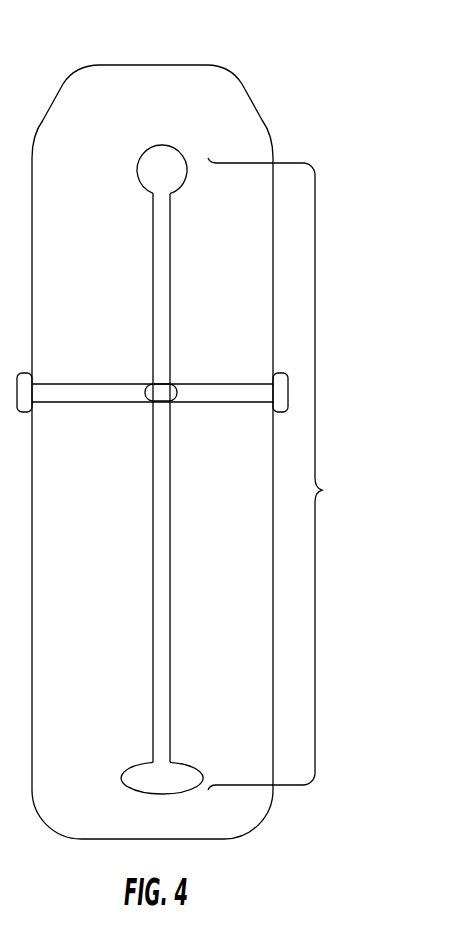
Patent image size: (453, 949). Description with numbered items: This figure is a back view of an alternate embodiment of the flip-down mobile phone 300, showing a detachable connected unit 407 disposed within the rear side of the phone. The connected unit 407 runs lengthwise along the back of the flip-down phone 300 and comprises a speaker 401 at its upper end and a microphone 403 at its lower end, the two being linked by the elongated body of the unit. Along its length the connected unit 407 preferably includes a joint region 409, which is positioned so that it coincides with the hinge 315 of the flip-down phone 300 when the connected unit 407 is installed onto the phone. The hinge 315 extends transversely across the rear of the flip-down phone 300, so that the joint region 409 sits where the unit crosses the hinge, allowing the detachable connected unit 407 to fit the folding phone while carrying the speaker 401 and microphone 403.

The flip-down mobile phone 300 is at (152, 82).
The speaker 401 is at (148, 165).
The microphone 403 is at (128, 777).
The hinge 315 is at (83, 388).
The joint region 409 is at (148, 396).
The detachable connected unit 407 is at (286, 474).